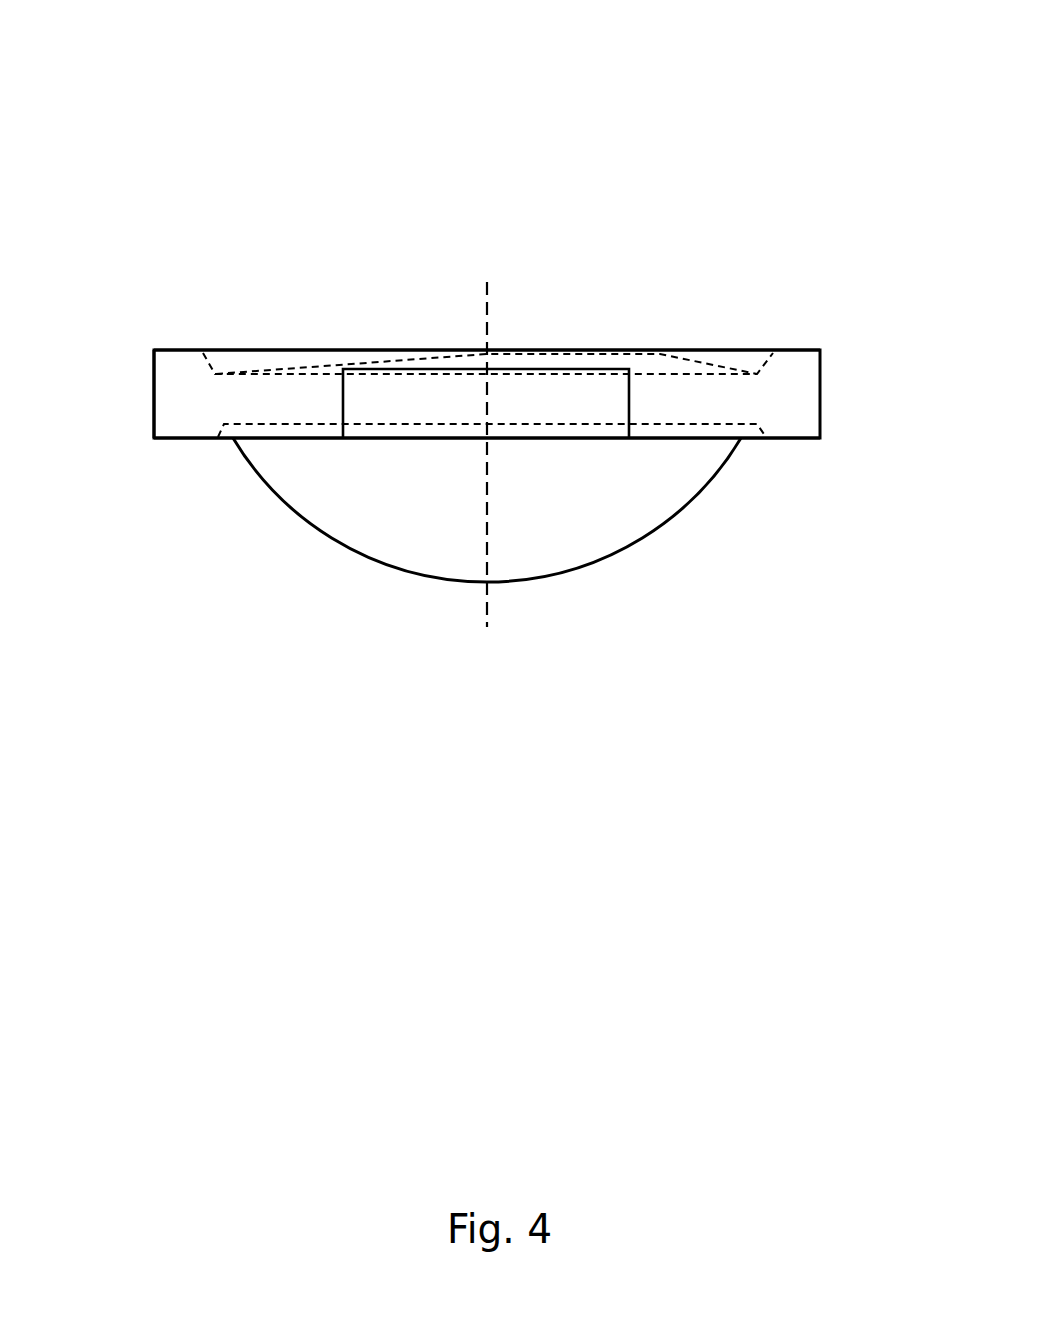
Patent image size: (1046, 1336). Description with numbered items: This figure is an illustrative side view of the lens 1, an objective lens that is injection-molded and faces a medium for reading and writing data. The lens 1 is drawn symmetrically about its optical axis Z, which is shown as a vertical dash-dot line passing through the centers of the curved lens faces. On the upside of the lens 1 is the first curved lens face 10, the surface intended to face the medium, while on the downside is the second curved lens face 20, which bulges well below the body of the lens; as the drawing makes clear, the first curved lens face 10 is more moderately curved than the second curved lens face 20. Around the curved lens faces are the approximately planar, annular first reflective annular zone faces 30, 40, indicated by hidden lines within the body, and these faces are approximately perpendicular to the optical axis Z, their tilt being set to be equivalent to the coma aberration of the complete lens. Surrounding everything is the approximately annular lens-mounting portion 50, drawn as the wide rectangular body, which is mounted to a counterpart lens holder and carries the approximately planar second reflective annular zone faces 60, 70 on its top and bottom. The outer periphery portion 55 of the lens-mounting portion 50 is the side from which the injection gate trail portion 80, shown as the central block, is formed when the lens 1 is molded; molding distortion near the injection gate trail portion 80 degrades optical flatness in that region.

The lens 1 is at (777, 112).
The optical axis Z is at (483, 298).
The first curved lens face 10 is at (660, 357).
The second curved lens face 20 is at (372, 562).
The first reflective annular zone face 30 is at (750, 372).
The first reflective annular zone face 40 is at (220, 443).
The lens-mounting portion 50 is at (807, 397).
The periphery portion 55 is at (153, 390).
The second reflective annular zone face 60 is at (800, 350).
The second reflective annular zone face 70 is at (176, 438).
The injection gate trail portion 80 is at (542, 397).